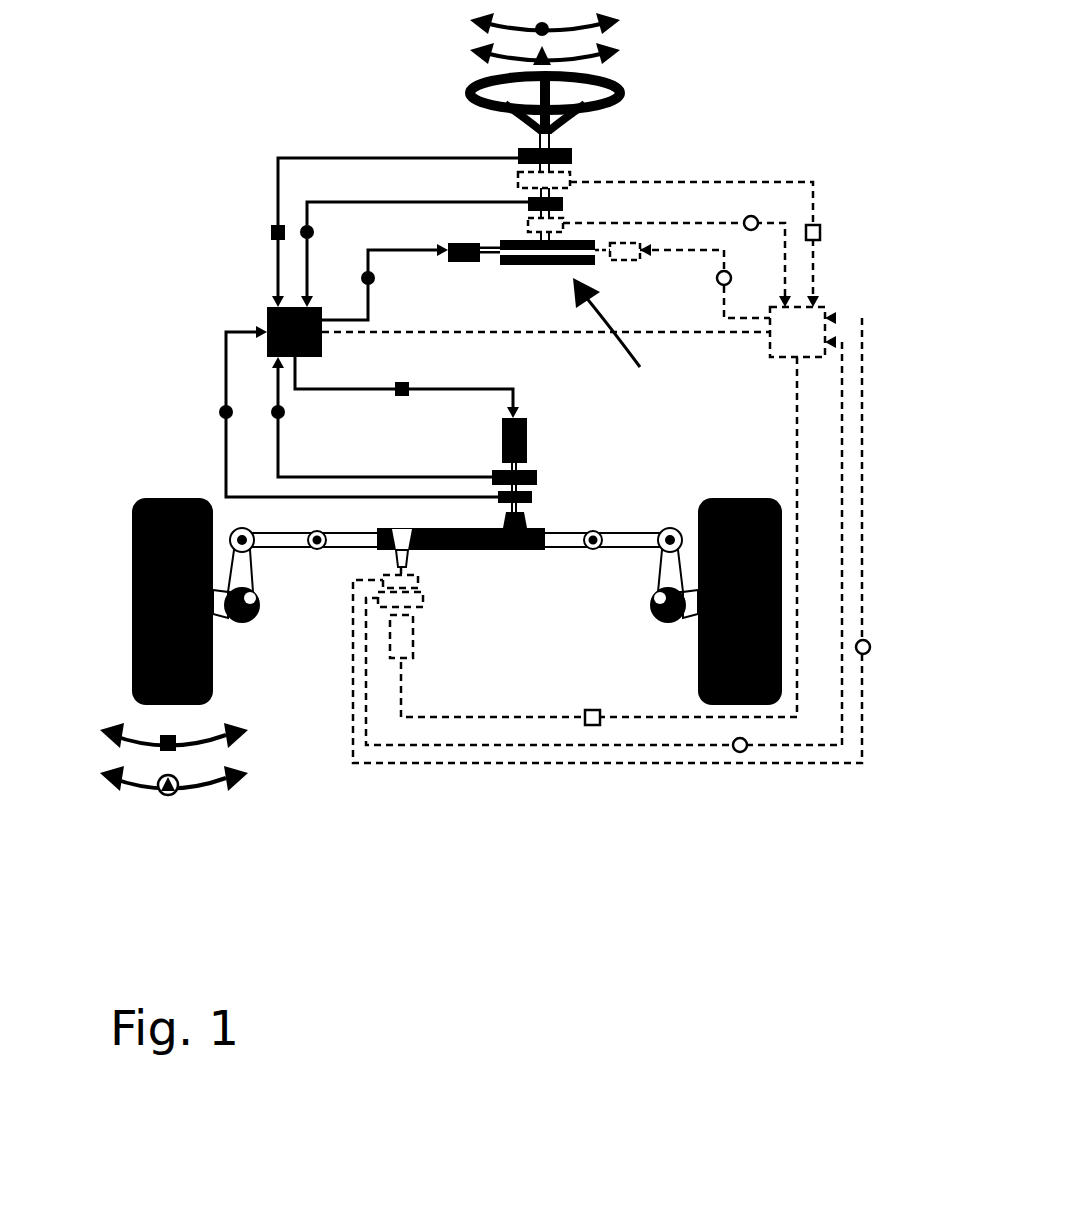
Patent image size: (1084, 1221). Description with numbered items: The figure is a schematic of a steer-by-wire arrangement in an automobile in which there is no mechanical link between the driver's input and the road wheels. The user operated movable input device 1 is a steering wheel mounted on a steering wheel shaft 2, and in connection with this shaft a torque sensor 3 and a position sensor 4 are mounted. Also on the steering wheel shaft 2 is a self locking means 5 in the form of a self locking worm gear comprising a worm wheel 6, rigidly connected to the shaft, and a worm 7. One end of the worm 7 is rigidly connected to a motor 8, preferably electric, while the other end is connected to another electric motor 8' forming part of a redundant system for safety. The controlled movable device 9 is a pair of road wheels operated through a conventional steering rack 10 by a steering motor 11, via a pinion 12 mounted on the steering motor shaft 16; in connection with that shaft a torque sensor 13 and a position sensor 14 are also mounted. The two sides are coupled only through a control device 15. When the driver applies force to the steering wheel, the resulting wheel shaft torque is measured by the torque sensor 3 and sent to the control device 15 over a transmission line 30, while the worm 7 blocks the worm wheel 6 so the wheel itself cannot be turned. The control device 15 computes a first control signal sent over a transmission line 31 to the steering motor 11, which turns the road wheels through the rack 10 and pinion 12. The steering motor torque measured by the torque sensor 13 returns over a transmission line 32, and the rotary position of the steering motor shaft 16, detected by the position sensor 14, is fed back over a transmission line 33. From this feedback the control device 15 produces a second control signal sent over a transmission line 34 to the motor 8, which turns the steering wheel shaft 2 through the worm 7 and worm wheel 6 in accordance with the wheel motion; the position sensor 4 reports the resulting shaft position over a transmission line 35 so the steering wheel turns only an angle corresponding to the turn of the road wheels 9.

The user operated movable input device 1 is at (618, 103).
The steering wheel shaft 2 is at (528, 138).
The torque sensor 3 is at (572, 157).
The position sensor 4 is at (528, 202).
The self locking means 5 is at (619, 337).
The worm wheel 6 is at (600, 240).
The worm 7 is at (497, 243).
The motor 8 is at (360, 161).
The electric motor 8' is at (646, 279).
The controlled movable device 9 is at (190, 498).
The steering rack 10 is at (497, 550).
The steering motor 11 is at (527, 430).
The pinion 12 is at (527, 520).
The torque sensor 13 is at (492, 472).
The position sensor 14 is at (532, 497).
The control device 15 is at (267, 310).
The steering motor shaft 16 is at (530, 468).
The transmission line 30 is at (278, 175).
The transmission line 31 is at (450, 389).
The transmission line 32 is at (312, 477).
The transmission line 33 is at (226, 380).
The transmission line 34 is at (368, 290).
The transmission line 35 is at (307, 232).